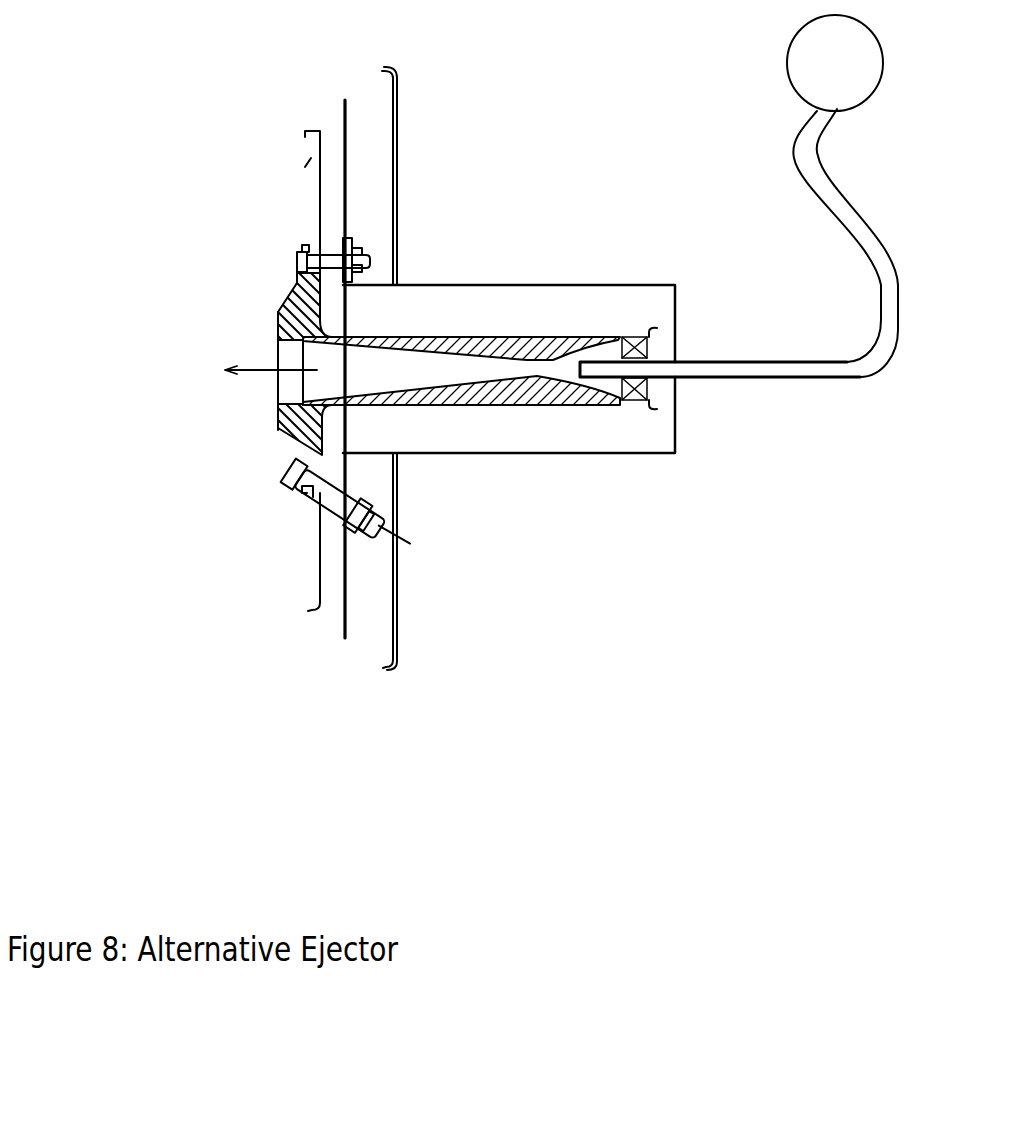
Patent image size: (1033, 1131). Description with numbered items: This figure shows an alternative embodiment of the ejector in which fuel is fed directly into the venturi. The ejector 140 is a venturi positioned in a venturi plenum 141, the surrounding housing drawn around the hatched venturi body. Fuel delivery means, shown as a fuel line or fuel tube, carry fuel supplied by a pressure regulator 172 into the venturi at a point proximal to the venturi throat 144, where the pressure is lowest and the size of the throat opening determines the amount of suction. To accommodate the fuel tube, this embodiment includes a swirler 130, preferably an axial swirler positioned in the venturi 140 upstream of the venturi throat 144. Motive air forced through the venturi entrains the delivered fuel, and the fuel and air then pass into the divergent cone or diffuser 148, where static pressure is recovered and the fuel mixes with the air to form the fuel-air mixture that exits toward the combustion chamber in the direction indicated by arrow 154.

The swirler 130 is at (640, 342).
The ejector 140 is at (567, 335).
The venturi plenum 141 is at (617, 297).
The venturi throat 144 is at (540, 373).
The diffuser 148 is at (400, 378).
The flow direction arrow 154 is at (247, 355).
The pressure regulator 172 is at (817, 68).